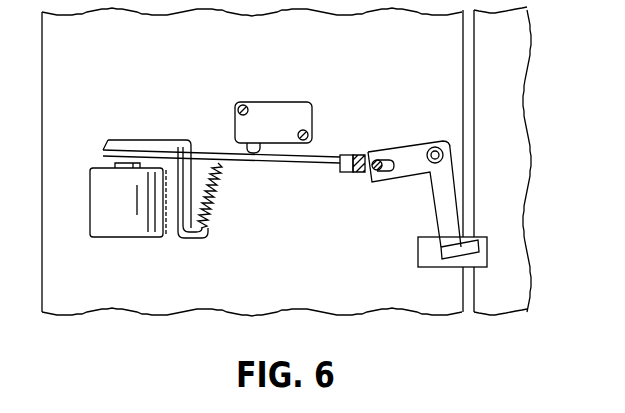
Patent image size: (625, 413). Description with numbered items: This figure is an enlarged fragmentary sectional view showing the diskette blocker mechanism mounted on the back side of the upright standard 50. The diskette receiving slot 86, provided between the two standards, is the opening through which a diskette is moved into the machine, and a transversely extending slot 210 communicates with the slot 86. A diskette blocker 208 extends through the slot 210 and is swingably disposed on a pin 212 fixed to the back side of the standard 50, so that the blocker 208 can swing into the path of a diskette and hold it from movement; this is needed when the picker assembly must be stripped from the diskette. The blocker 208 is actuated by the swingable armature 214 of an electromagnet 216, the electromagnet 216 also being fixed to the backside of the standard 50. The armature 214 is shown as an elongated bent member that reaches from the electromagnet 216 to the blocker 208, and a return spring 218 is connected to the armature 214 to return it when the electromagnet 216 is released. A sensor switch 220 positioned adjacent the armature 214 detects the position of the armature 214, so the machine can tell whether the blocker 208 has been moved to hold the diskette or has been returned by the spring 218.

The upright standard 50 is at (297, 305).
The diskette receiving slot 86 is at (473, 103).
The diskette blocker 208 is at (431, 205).
The transversely extending slot 210 is at (432, 264).
The pin 212 is at (438, 143).
The swingable armature 214 is at (101, 142).
The electromagnet 216 is at (125, 202).
The return spring 218 is at (222, 192).
The sensor switch 220 is at (274, 102).